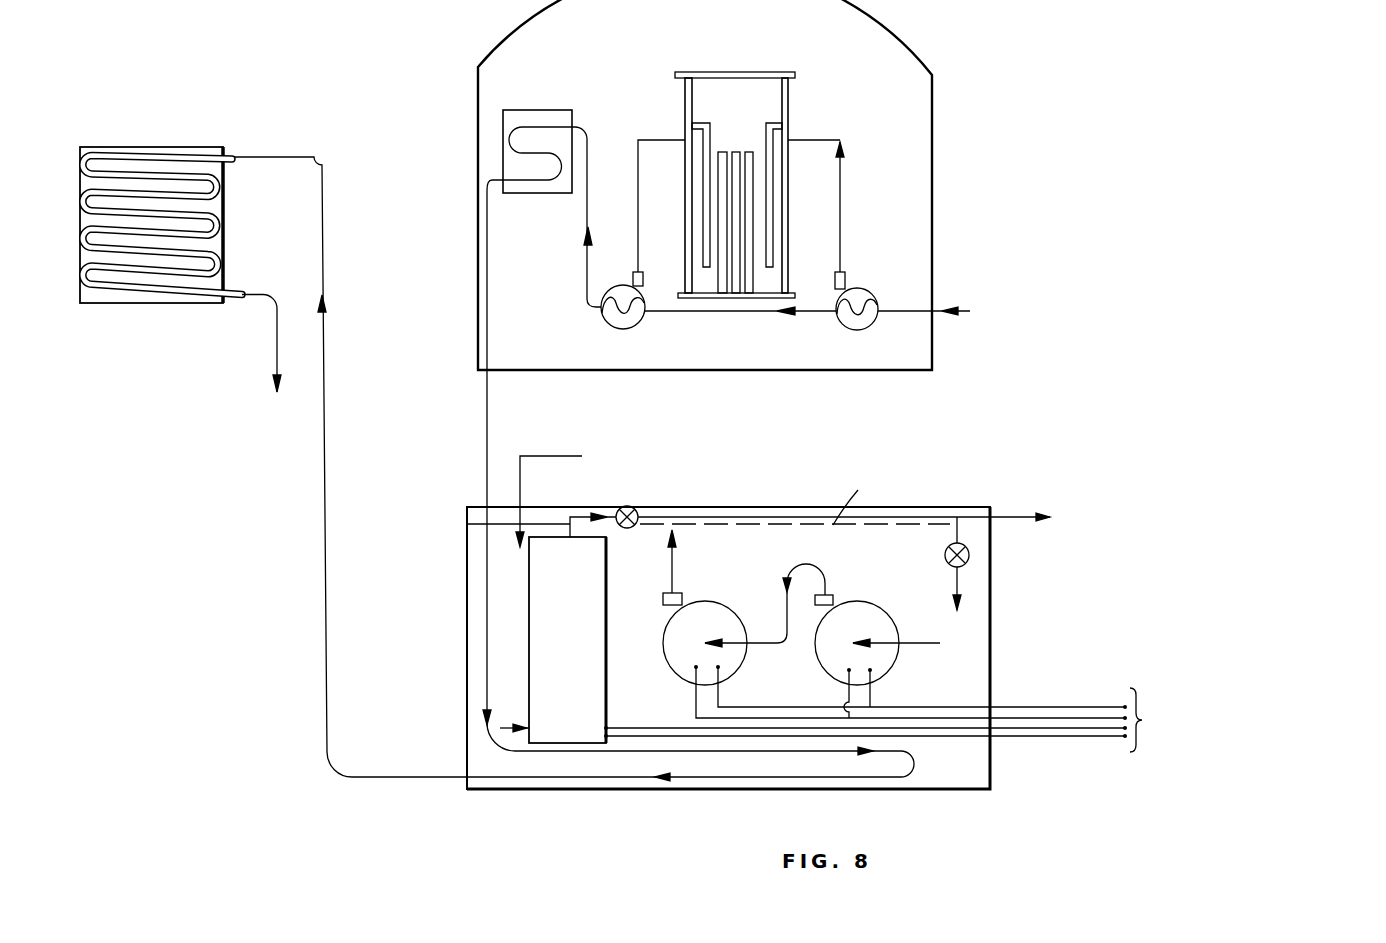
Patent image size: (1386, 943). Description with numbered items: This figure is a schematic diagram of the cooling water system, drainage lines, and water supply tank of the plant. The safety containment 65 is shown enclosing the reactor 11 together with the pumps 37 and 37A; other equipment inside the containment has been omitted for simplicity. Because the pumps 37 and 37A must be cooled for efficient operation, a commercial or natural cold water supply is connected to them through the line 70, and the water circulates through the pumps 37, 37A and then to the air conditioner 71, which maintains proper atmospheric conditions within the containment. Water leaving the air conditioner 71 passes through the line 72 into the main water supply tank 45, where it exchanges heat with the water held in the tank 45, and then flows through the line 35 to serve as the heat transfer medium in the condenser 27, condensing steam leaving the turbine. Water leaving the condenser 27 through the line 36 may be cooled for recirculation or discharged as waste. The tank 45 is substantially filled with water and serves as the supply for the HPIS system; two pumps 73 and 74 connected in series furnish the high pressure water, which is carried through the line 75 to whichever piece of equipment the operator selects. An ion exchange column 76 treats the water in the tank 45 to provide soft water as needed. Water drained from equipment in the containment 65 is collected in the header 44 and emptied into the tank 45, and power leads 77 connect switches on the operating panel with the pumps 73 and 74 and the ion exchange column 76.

The reactor 11 is at (787, 108).
The condenser 27 is at (224, 233).
The line 35 is at (338, 140).
The line 36 is at (273, 340).
The pump 37 is at (624, 328).
The pump 37A is at (882, 286).
The header 44 is at (565, 497).
The main water supply tank 45 is at (993, 613).
The safety containment 65 is at (913, 51).
The line 70 is at (922, 314).
The air conditioner 71 is at (540, 110).
The line 72 is at (487, 337).
The pump 73 is at (868, 604).
The pump 74 is at (712, 604).
The line 75 is at (1007, 518).
The ion exchange column 76 is at (612, 641).
The power leads 77 is at (890, 708).